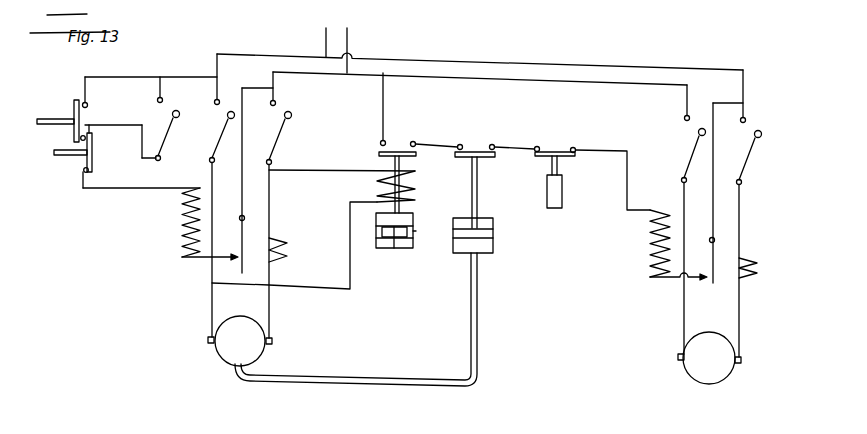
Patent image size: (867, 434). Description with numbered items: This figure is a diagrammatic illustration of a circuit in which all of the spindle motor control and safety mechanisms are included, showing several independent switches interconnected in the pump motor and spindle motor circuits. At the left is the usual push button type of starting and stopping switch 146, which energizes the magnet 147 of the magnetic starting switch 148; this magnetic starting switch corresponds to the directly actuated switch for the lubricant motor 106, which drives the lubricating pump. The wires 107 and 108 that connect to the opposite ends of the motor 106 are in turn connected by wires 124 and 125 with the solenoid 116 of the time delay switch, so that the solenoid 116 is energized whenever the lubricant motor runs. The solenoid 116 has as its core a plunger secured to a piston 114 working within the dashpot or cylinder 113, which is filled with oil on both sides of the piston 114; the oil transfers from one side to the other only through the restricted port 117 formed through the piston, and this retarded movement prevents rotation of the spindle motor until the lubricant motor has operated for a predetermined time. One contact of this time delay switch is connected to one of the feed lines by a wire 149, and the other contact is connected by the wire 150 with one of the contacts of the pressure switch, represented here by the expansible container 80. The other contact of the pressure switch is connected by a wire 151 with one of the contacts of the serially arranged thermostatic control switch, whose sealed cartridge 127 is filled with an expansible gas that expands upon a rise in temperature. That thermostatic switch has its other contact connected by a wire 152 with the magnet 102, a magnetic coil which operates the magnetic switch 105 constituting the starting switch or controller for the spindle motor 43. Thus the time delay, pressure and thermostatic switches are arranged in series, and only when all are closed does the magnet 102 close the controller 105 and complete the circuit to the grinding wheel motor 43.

The starting and stopping switch 146 is at (58, 143).
The magnet 147 is at (183, 230).
The magnetic starting switch 148 is at (283, 113).
The wire 149 is at (385, 108).
The wire 150 is at (455, 133).
The wire 151 is at (533, 134).
The wire 152 is at (626, 181).
The sealed cartridge 127 is at (556, 208).
The magnetic coil 102 is at (652, 246).
The magnetic switch 105 is at (744, 131).
The grinding wheel motor 43 is at (718, 374).
The motor 106 is at (233, 356).
The wire 107 is at (211, 318).
The wire 108 is at (274, 313).
The wire 124 is at (308, 172).
The wire 125 is at (329, 285).
The solenoid 116 is at (408, 188).
The restricted port 117 is at (393, 249).
The dashpot or cylinder 113 is at (398, 255).
The piston 114 is at (414, 231).
The container 80 is at (494, 248).